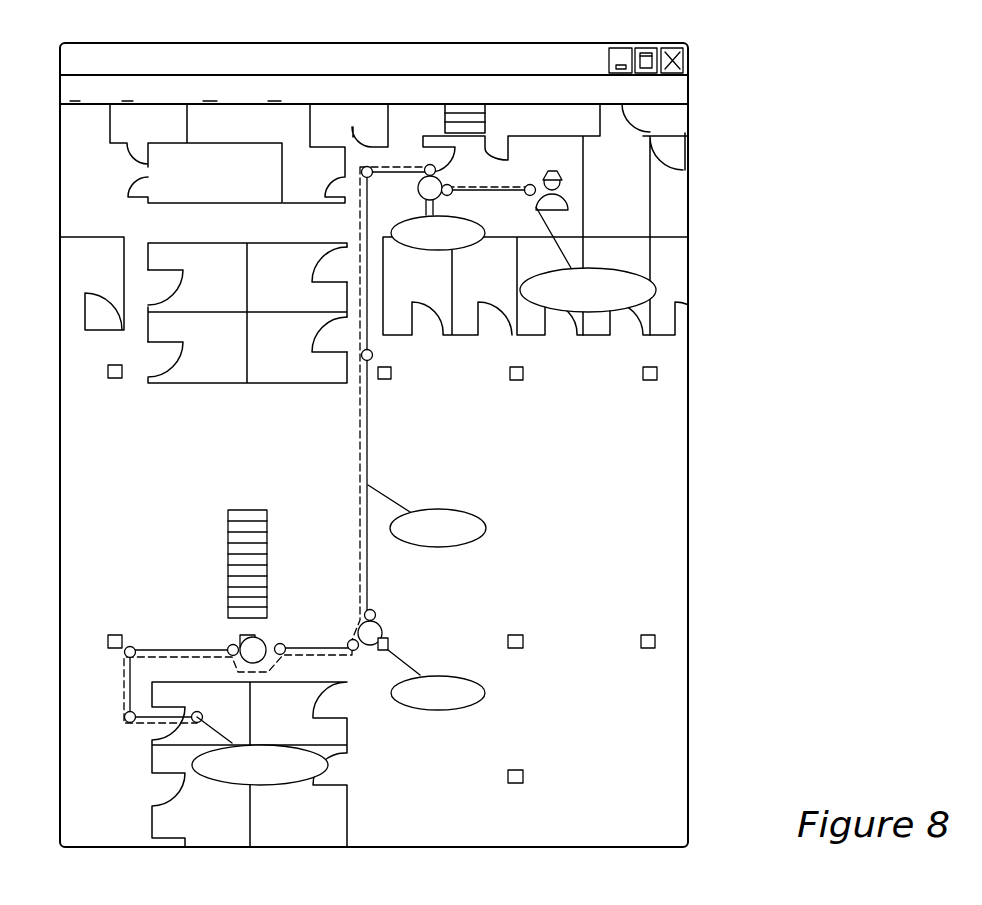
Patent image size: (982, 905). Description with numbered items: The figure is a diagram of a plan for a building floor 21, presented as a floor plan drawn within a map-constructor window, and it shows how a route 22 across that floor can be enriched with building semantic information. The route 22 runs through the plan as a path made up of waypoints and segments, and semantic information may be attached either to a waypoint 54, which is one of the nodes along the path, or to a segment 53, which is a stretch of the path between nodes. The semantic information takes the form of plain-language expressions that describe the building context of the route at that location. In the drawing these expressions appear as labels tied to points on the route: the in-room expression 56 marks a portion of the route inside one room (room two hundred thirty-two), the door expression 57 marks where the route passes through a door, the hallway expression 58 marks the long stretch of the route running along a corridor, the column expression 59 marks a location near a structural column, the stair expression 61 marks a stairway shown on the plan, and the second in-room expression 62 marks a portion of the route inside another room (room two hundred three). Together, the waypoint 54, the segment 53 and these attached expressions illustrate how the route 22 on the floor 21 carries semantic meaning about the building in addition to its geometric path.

The floor 21 is at (708, 398).
The route 22 is at (358, 477).
The segment 53 is at (368, 288).
The waypoint 54 is at (370, 360).
The "In Room 232" expression 56 is at (555, 312).
The "Door" expression 57 is at (430, 252).
The "Hallway" expression 58 is at (472, 540).
The "Column" expression 59 is at (477, 700).
The "Stair" expression 61 is at (237, 510).
The "In Room 203" expression 62 is at (328, 765).